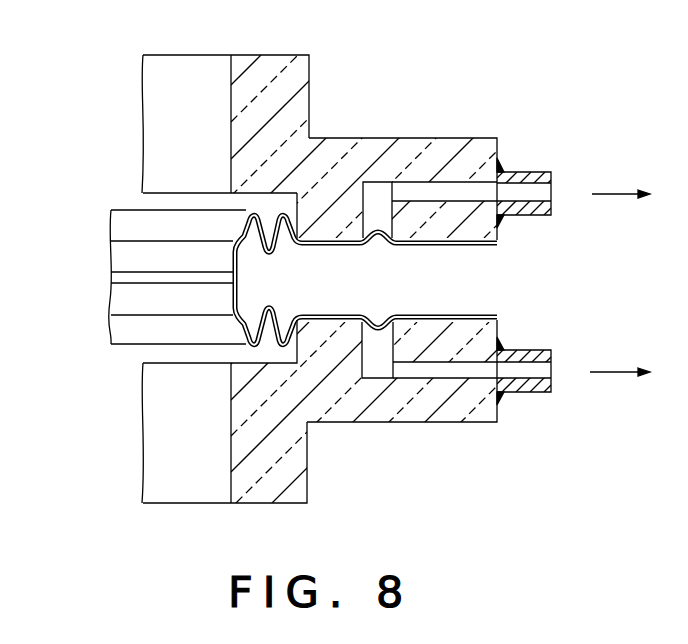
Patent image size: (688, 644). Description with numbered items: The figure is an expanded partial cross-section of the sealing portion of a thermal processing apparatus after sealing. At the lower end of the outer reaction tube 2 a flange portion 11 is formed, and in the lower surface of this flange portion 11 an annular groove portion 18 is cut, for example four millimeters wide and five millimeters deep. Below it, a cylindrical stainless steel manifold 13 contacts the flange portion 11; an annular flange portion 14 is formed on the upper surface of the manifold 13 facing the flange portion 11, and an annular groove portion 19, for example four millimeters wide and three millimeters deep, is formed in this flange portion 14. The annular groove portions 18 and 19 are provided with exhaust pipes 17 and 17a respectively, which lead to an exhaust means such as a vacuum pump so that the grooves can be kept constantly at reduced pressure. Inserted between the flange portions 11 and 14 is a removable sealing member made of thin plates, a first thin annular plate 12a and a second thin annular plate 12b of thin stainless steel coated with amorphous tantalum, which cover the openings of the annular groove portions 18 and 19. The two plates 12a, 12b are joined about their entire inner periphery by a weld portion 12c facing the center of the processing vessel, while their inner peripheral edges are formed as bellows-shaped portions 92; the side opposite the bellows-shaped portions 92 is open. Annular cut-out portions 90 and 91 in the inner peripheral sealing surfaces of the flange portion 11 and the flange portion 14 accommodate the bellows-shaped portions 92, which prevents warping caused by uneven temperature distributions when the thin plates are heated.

The outer reaction tube 2 is at (311, 68).
The flange portion 11 is at (498, 138).
The first thin annular plate 12a is at (133, 253).
The second thin annular plate 12b is at (129, 305).
The weld portion 12c is at (138, 276).
The manifold 13 is at (305, 490).
The flange portion 14 is at (455, 422).
The exhaust pipe 17 is at (538, 173).
The exhaust pipe 17a is at (535, 393).
The annular groove portion 18 is at (378, 192).
The annular groove portion 19 is at (382, 370).
The annular cut-out portion 90 is at (257, 200).
The annular cut-out portion 91 is at (257, 353).
The bellows-shaped portion 92 is at (105, 180).